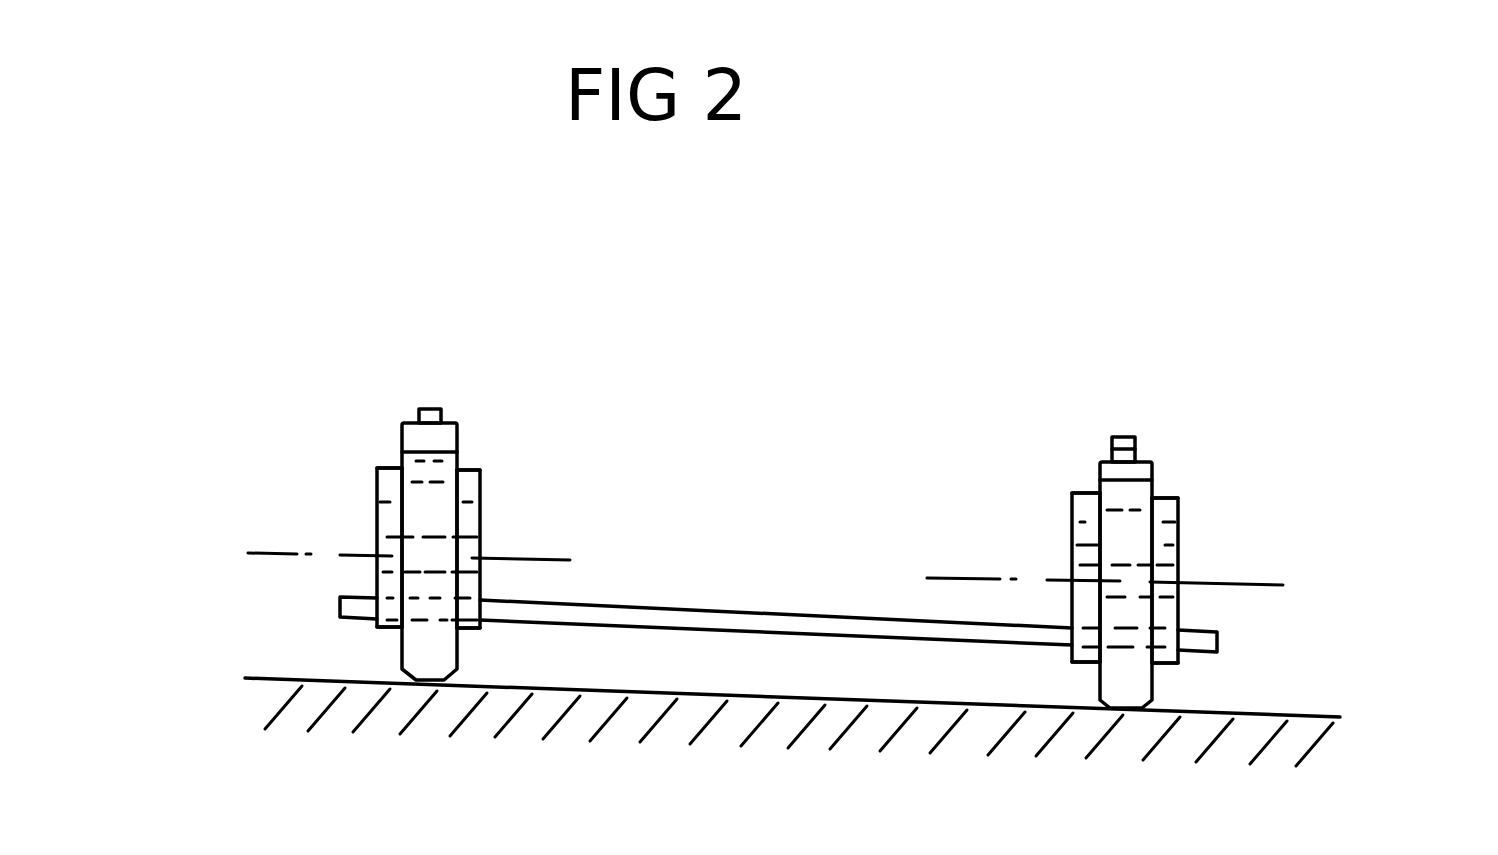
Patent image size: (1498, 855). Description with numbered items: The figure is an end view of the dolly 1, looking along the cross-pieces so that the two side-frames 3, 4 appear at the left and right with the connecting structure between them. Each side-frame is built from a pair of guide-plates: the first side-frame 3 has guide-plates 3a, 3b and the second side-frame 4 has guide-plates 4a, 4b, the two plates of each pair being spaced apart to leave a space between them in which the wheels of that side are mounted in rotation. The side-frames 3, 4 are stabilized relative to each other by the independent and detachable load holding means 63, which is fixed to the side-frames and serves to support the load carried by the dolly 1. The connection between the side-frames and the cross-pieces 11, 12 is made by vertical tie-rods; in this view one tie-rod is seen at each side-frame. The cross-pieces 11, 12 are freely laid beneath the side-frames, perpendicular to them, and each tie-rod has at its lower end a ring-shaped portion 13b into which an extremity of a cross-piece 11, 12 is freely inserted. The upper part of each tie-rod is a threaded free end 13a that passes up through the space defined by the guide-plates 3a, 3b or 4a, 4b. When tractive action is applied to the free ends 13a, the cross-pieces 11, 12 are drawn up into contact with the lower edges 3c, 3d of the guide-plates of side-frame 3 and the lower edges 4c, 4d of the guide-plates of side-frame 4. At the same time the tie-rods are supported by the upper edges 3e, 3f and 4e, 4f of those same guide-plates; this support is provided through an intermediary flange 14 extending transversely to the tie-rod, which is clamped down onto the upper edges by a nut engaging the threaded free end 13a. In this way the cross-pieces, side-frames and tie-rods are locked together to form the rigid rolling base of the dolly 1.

The dolly 1 is at (1055, 262).
The side-frame 3 is at (402, 436).
The guide-plate 3a is at (380, 500).
The guide-plate 3b is at (483, 515).
The lower edge of guide-plate 3c is at (390, 636).
The lower edge of guide-plate 3d is at (465, 636).
The upper edge of guide-plate 3e is at (377, 485).
The upper edge of guide-plate 3f is at (483, 490).
The side-frame 4 is at (1181, 480).
The guide-plate 4a is at (1072, 545).
The guide-plate 4b is at (1182, 531).
The lower edge of guide-plate 4c is at (1078, 666).
The lower edge of guide-plate 4d is at (1170, 670).
The upper edge of guide-plate 4e is at (1072, 527).
The upper edge of guide-plate 4f is at (1182, 528).
The cross-piece 11 is at (778, 534).
The cross-piece 12 is at (717, 605).
The free end of tie-rod 13a is at (430, 410).
The ring-shaped portion of tie-rod 13b is at (1120, 437).
The intermediary flange 14 is at (465, 470).
The load holding means 63 is at (800, 388).